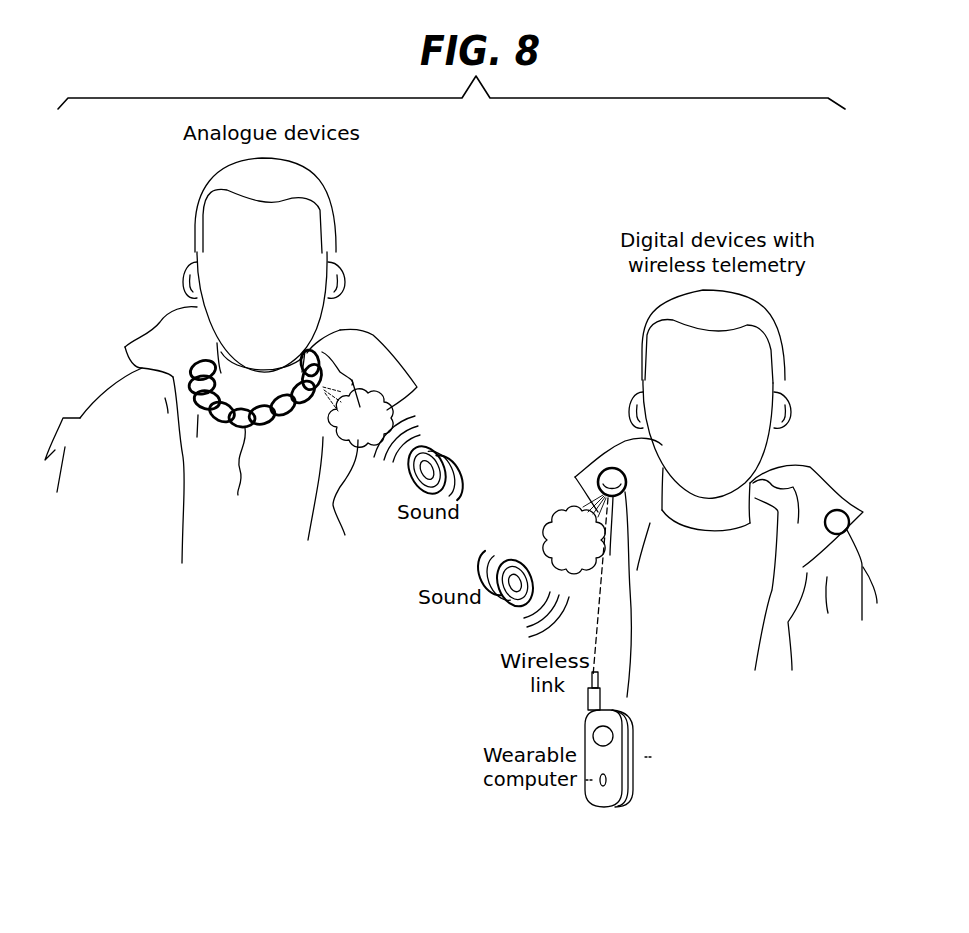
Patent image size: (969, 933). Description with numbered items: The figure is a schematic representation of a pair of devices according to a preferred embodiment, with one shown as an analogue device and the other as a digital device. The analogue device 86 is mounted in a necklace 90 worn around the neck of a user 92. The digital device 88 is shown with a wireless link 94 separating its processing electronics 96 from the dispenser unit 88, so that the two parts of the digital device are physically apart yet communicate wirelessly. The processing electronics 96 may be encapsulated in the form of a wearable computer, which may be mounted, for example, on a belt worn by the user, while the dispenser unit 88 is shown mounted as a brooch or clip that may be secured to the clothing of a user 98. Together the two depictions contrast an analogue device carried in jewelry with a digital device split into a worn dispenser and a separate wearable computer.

The user 92 is at (337, 222).
The analogue device 86 is at (320, 357).
The necklace 90 is at (242, 477).
The user 98 is at (787, 337).
The digital device 88 is at (603, 472).
The wireless link 94 is at (633, 587).
The processing electronics 96 is at (637, 743).